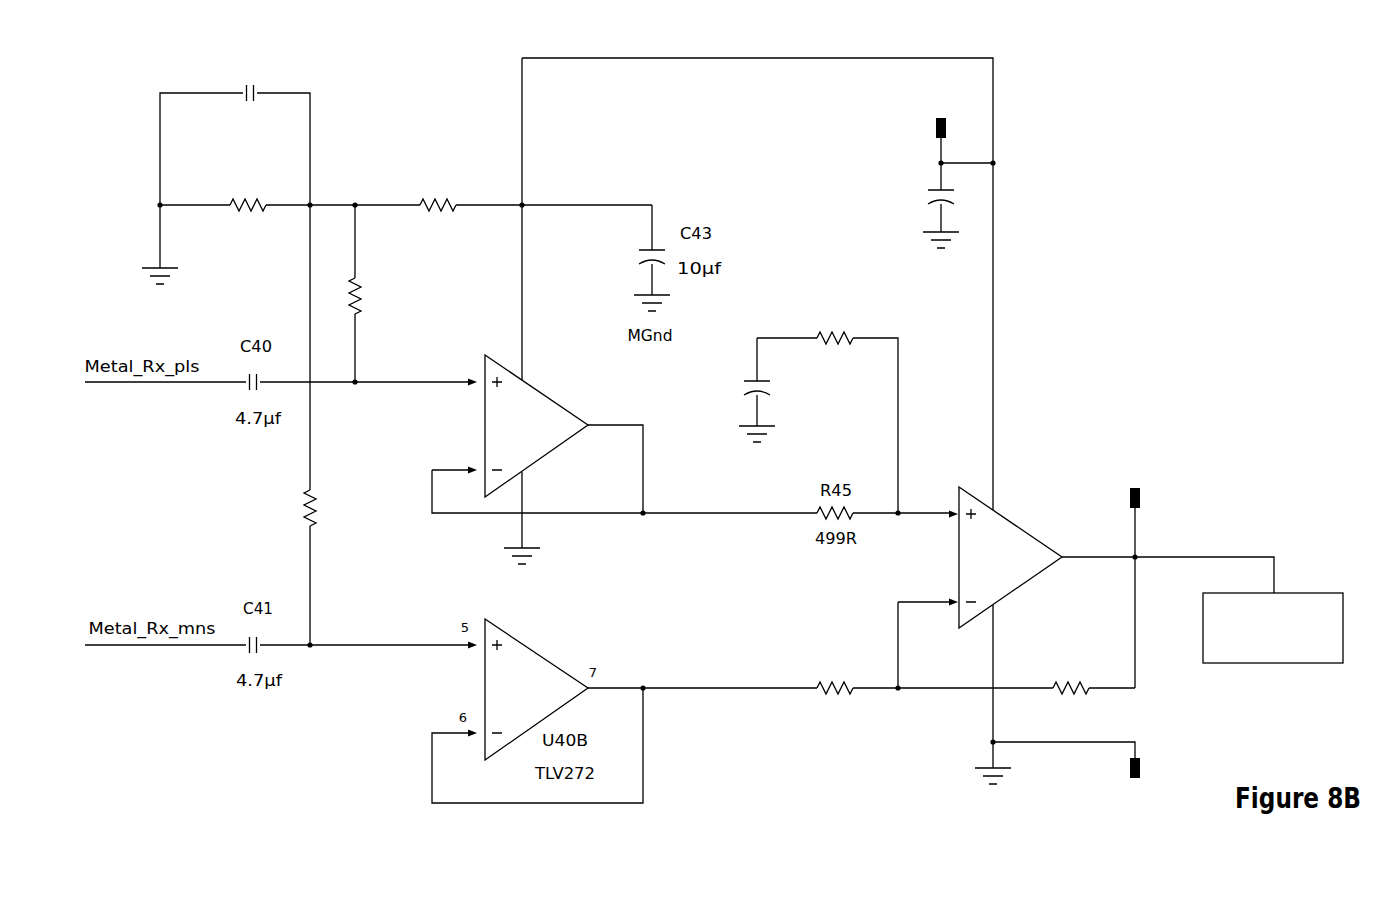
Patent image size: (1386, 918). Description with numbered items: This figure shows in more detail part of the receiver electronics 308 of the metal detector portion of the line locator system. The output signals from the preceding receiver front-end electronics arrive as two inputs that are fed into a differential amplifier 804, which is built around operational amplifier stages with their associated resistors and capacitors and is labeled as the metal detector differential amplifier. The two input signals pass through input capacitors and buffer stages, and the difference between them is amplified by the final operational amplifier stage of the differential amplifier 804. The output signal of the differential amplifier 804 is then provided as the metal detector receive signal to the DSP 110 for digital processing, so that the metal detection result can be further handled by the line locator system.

The receiver electronics 308 is at (440, 137).
The differential amplifier 804 is at (1170, 180).
The DSP 110 is at (1274, 663).